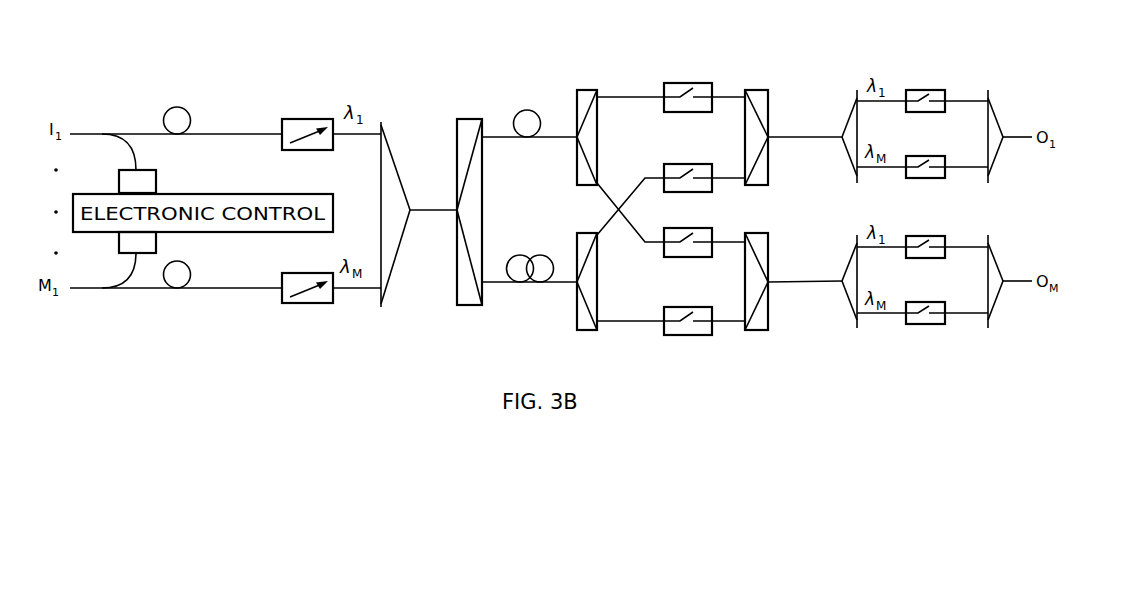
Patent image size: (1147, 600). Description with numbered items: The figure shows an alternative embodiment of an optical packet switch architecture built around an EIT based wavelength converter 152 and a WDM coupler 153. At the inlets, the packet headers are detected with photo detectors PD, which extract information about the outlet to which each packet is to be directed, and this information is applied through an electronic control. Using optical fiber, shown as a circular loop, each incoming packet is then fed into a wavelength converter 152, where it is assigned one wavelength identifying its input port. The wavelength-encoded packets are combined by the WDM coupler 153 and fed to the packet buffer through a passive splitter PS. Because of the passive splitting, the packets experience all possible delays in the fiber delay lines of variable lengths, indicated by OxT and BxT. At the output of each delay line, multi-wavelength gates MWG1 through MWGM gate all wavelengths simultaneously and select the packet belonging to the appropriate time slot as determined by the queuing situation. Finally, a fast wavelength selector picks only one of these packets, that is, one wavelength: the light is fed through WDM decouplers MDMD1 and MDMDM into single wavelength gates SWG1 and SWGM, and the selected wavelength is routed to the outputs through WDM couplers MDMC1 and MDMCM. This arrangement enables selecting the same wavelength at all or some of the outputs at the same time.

The EIT wavelength converter 152 is at (305, 303).
The WDM coupler 153 is at (385, 290).
The photo detector PD is at (137, 212).
The passive splitter PS is at (469, 225).
The fiber delay line of length 0×T OxT is at (522, 135).
The fiber delay line of length B×T BxT is at (528, 281).
The multi-wavelength gate MWG1 is at (683, 81).
The multi-wavelength gate MWGM is at (681, 337).
The WDM decoupler MDMD1 is at (851, 101).
The WDM decoupler MDMDM is at (848, 310).
The single wavelength gate SWG1 is at (919, 150).
The single wavelength gate SWGM is at (919, 297).
The WDM coupler MDMC1 is at (993, 107).
The WDM coupler MDMCM is at (998, 305).